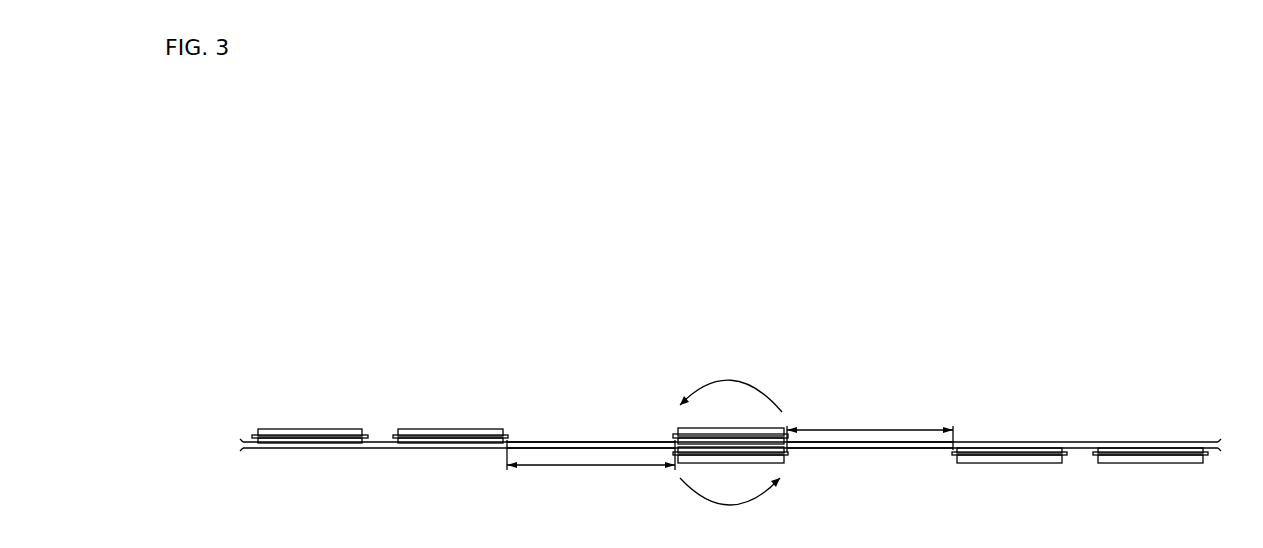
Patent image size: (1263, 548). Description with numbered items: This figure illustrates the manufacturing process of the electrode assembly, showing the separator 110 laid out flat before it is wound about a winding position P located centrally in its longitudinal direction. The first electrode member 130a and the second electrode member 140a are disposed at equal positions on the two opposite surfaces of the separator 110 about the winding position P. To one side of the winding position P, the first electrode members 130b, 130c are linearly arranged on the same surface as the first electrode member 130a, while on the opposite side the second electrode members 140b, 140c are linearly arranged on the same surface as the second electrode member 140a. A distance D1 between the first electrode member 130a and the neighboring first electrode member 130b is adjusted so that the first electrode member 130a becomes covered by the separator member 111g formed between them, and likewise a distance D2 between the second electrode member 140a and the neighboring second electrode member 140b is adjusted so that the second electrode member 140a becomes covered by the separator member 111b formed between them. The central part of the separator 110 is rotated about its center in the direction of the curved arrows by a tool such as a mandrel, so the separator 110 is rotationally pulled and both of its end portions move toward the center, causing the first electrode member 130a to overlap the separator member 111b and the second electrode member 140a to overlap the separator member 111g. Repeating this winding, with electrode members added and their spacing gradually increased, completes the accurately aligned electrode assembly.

The separator 110 is at (1082, 441).
The separator member 111g is at (578, 441).
The separator member 111b is at (848, 449).
The first electrode member 130a is at (680, 428).
The first electrode member 130b is at (478, 429).
The first electrode member 130c is at (345, 429).
The second electrode member 140a is at (775, 463).
The second electrode member 140b is at (970, 463).
The second electrode member 140c is at (1110, 463).
The winding position P is at (742, 419).
The distance D1 is at (591, 463).
The distance D2 is at (870, 433).